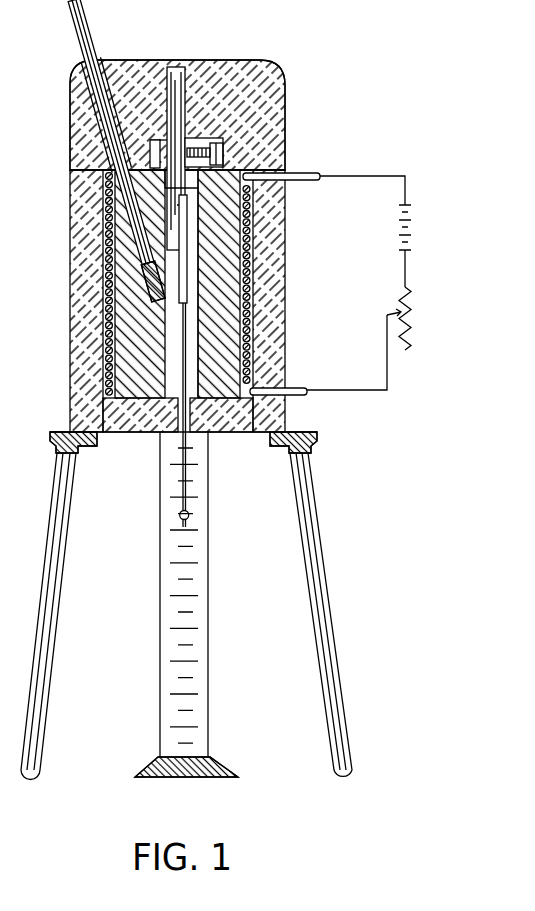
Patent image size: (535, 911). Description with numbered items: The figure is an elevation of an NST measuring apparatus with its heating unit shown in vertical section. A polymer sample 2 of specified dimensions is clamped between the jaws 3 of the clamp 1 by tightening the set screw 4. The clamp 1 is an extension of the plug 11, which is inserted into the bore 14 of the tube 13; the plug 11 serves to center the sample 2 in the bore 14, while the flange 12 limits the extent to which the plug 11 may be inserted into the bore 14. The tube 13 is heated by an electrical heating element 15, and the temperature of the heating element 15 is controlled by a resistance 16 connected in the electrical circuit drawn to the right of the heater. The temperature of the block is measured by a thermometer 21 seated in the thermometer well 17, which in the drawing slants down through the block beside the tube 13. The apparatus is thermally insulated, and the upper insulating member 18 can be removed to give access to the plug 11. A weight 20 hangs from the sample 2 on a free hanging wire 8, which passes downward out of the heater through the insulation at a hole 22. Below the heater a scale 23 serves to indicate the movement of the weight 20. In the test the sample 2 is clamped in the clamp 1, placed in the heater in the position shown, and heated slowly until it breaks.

The clamp 1 is at (172, 66).
The sample 2 is at (188, 268).
The jaws 3 is at (181, 216).
The set screw 4 is at (222, 153).
The free hanging wire 8 is at (186, 370).
The plug 11 is at (197, 139).
The flange 12 is at (162, 134).
The tube 13 is at (234, 238).
The bore 14 is at (190, 325).
The electrical heating element 15 is at (250, 350).
The resistance 16 is at (411, 303).
The thermometer well 17 is at (157, 293).
The insulating member 18 is at (262, 60).
The weight 20 is at (189, 520).
The thermometer 21 is at (86, 34).
The hole 22 is at (192, 432).
The scale 23 is at (208, 587).